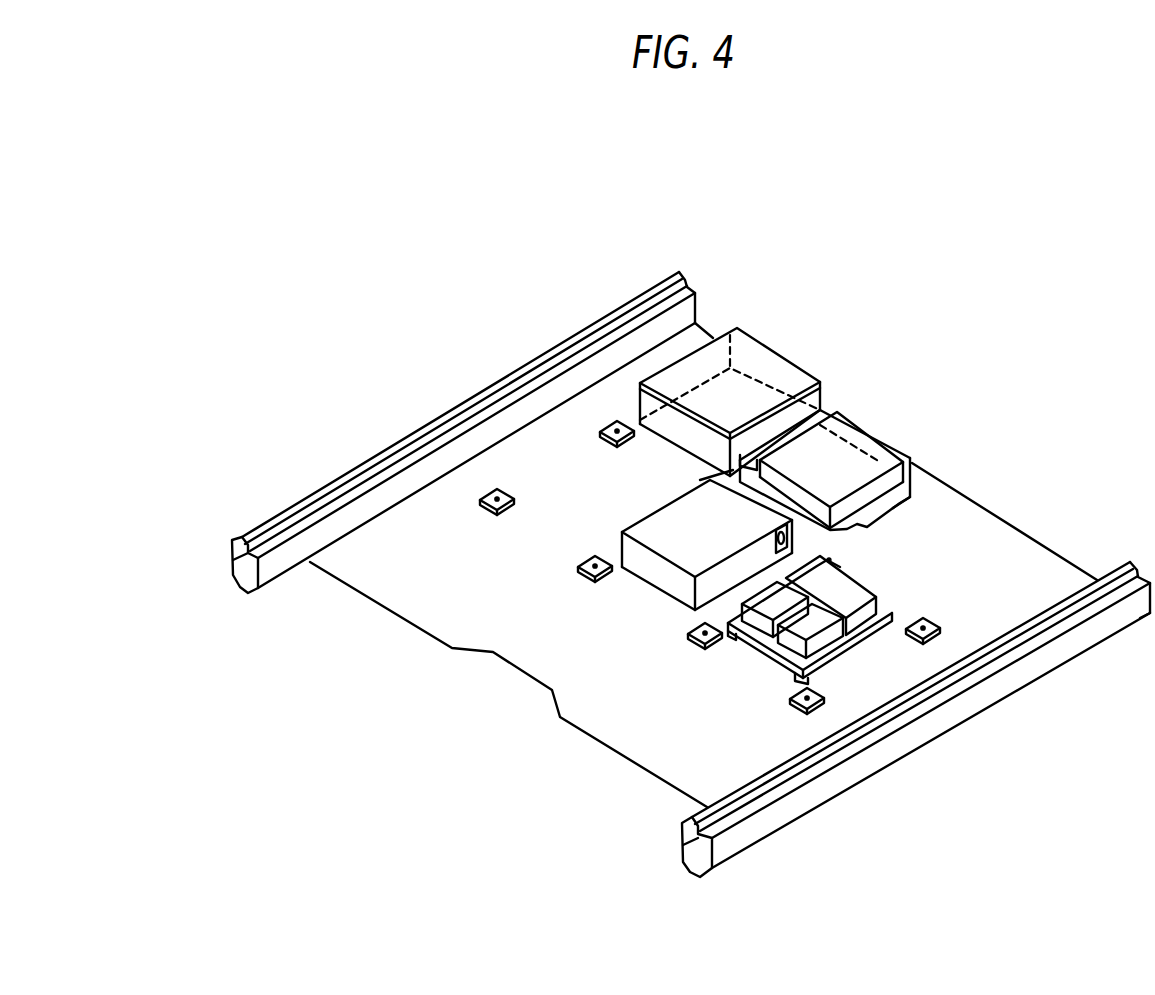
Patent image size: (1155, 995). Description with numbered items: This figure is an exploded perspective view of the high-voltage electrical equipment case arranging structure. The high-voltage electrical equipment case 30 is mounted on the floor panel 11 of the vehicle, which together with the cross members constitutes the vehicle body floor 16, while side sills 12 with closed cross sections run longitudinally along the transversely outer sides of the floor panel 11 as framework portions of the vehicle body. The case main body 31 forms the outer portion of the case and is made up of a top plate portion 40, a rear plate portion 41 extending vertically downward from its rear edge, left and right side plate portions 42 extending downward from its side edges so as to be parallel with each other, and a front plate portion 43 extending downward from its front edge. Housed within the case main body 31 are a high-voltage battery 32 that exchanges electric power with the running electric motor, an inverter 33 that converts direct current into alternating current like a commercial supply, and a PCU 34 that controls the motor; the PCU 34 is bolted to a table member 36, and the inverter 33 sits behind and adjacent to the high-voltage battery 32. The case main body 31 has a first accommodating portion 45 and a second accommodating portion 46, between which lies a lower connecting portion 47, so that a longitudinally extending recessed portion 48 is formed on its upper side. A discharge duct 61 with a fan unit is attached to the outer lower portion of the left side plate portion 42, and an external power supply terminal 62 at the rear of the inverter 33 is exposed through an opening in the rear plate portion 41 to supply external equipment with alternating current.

The floor panel 11 is at (1022, 560).
The side sill 12 is at (238, 520).
The vehicle body floor 16 is at (326, 455).
The high-voltage electrical equipment case 30 is at (690, 245).
The case main body 31 is at (830, 368).
The high-voltage battery 32 is at (653, 575).
The inverter 33 is at (715, 478).
The PCU (power control unit) 34 is at (890, 587).
The table member 36 is at (850, 650).
The top plate portion 40 is at (720, 353).
The rear plate portion 41 is at (773, 373).
The side plate portion 42 is at (677, 373).
The front plate portion 43 is at (682, 432).
The first accommodating portion 45 is at (760, 340).
The second accommodating portion 46 is at (880, 423).
The connecting portion 47 is at (745, 468).
The recessed portion 48 is at (823, 408).
The discharge duct 61 is at (900, 505).
The external power supply terminal 62 is at (788, 537).